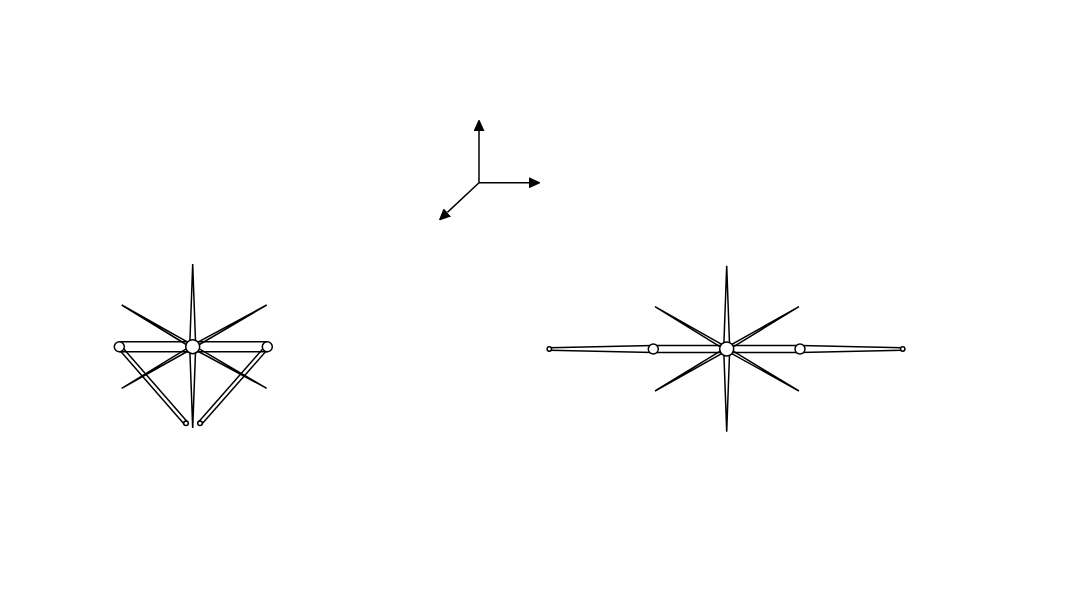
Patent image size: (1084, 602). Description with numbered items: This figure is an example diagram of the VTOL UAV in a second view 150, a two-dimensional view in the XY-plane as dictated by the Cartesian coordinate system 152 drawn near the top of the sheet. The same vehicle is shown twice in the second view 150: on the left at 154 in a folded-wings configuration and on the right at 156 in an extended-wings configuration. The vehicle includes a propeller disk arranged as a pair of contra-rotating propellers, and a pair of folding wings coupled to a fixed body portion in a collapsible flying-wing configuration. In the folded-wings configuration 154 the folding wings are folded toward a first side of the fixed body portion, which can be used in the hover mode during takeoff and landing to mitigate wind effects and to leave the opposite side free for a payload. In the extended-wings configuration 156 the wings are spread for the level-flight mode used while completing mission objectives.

The second view 150 is at (154, 66).
The Cartesian coordinate system 152 is at (545, 111).
The folded-wings configuration 154 is at (296, 236).
The extended-wings configuration 156 is at (841, 236).